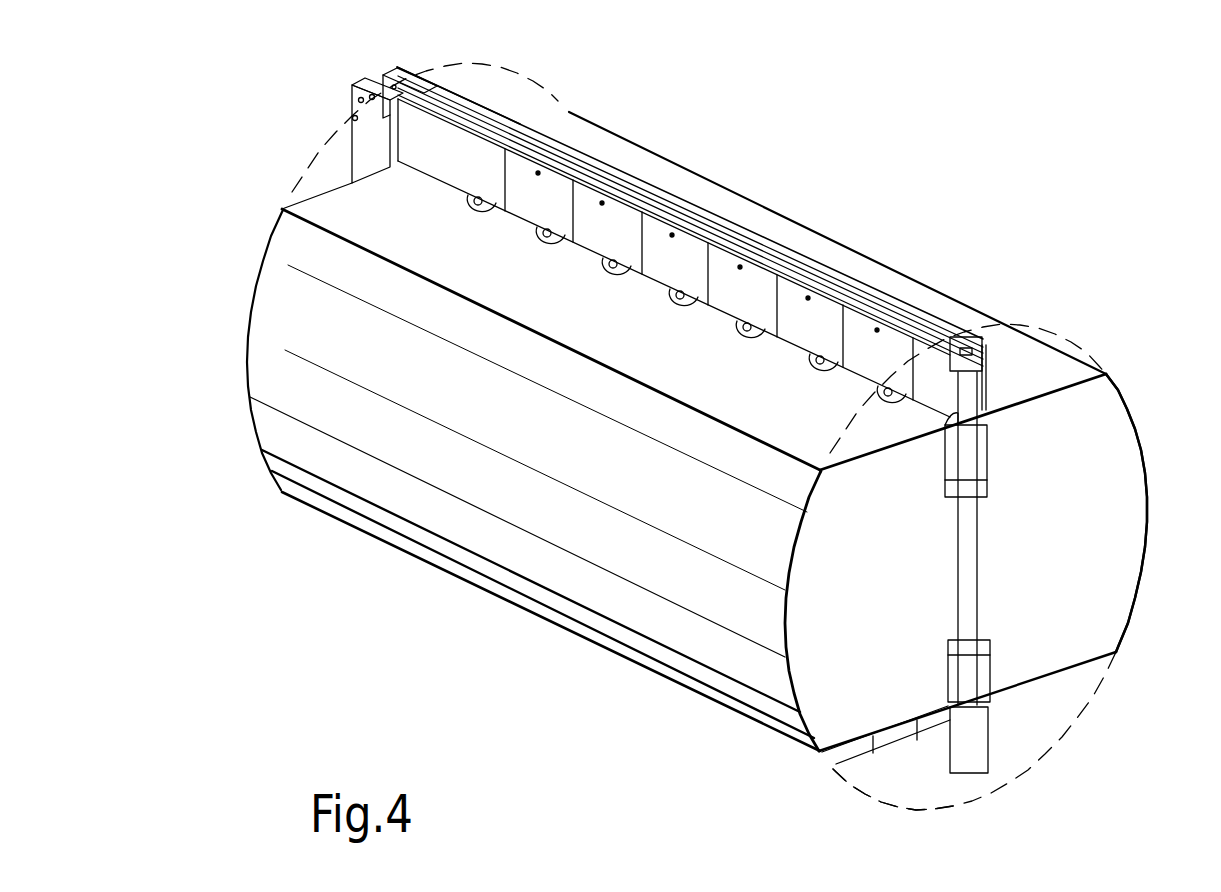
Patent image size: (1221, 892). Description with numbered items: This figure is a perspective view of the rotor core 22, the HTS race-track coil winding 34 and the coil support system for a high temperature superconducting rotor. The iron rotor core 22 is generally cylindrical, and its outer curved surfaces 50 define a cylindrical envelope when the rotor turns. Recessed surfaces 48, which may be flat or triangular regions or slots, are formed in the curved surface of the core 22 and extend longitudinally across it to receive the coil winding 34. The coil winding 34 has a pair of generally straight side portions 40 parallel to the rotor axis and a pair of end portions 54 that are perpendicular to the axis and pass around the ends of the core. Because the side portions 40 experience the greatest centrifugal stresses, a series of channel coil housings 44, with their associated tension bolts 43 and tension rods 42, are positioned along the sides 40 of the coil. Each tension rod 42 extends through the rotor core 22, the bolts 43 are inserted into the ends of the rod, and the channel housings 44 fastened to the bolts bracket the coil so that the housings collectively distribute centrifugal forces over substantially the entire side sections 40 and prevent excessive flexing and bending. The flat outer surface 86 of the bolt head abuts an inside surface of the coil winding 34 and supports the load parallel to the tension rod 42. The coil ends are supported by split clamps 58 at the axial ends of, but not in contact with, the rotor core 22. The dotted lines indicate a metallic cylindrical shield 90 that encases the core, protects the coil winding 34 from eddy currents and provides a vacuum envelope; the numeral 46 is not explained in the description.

The rotor core 22 is at (1062, 625).
The HTS race-track coil winding 34 is at (1030, 345).
The side portions 40 is at (908, 297).
The tension rod 42 is at (970, 590).
The tension bolts 43 is at (972, 458).
The channel coil housings 44 is at (520, 122).
The clip 46 is at (565, 238).
The recessed surfaces 48 is at (658, 183).
The outer curved surfaces 50 is at (628, 549).
The end portions 54 is at (441, 85).
The split clamps 58 is at (357, 147).
The flat outer surface 86 is at (980, 413).
The cylindrical shield 90 is at (308, 172).